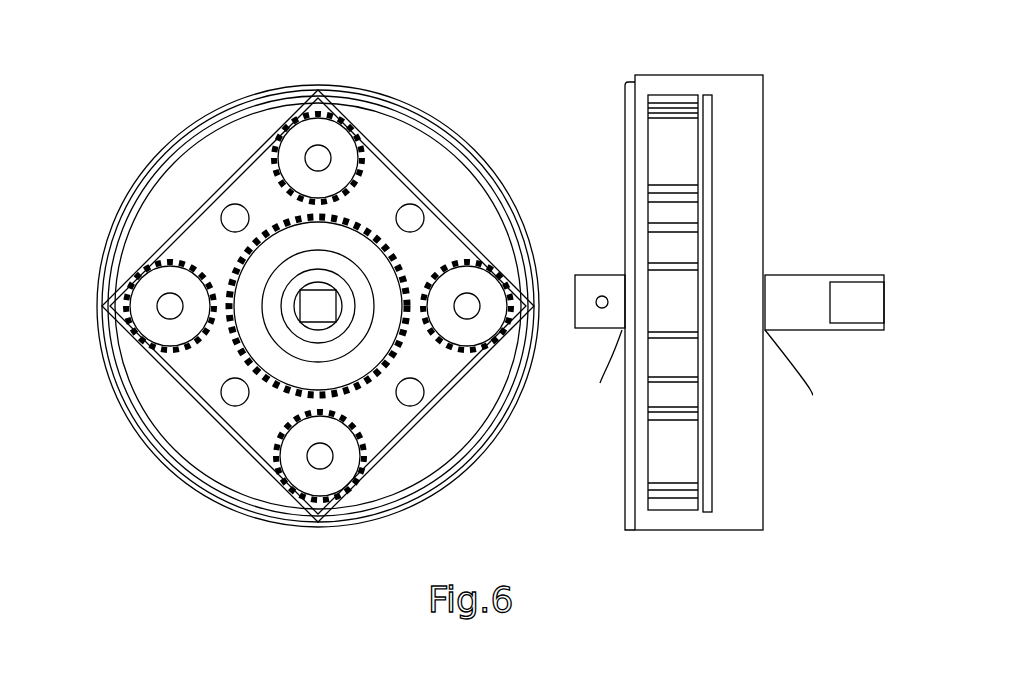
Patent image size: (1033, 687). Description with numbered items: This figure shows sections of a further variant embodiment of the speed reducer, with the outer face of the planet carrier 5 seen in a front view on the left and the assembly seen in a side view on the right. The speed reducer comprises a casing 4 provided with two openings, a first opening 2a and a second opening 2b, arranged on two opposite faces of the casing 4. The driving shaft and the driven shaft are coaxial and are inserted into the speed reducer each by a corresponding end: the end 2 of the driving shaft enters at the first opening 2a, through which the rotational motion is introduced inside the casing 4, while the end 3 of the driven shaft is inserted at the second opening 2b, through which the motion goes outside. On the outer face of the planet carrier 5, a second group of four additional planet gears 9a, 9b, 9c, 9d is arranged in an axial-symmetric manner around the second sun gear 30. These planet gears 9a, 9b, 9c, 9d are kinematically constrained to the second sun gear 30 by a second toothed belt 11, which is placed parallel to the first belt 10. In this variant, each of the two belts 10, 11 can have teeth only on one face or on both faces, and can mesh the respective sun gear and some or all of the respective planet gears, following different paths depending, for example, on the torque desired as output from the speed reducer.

The end of the driving shaft 2 is at (886, 292).
The first opening 2a is at (804, 381).
The second opening 2b is at (591, 373).
The end of the driven shaft 3 is at (604, 275).
The casing 4 is at (695, 75).
The planet carrier 5 is at (175, 200).
The second planet gear 9a is at (150, 310).
The second planet gear 9b is at (470, 295).
The second planet gear 9c is at (318, 140).
The second planet gear 9d is at (320, 478).
The first toothed belt 10 is at (233, 177).
The second toothed belt 11 is at (448, 390).
The second sun gear 30 is at (345, 250).